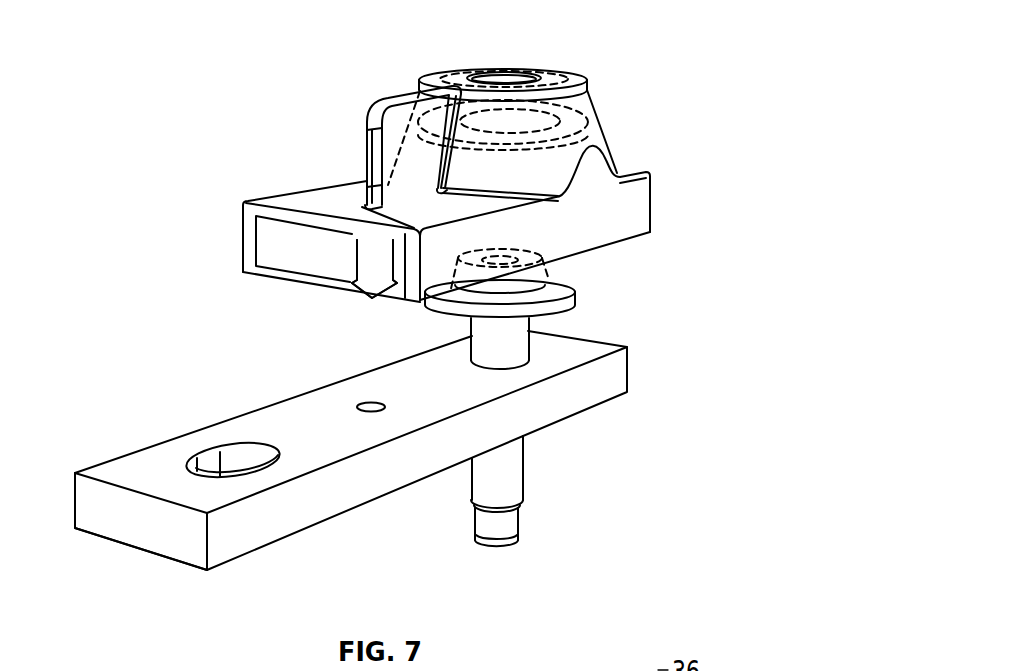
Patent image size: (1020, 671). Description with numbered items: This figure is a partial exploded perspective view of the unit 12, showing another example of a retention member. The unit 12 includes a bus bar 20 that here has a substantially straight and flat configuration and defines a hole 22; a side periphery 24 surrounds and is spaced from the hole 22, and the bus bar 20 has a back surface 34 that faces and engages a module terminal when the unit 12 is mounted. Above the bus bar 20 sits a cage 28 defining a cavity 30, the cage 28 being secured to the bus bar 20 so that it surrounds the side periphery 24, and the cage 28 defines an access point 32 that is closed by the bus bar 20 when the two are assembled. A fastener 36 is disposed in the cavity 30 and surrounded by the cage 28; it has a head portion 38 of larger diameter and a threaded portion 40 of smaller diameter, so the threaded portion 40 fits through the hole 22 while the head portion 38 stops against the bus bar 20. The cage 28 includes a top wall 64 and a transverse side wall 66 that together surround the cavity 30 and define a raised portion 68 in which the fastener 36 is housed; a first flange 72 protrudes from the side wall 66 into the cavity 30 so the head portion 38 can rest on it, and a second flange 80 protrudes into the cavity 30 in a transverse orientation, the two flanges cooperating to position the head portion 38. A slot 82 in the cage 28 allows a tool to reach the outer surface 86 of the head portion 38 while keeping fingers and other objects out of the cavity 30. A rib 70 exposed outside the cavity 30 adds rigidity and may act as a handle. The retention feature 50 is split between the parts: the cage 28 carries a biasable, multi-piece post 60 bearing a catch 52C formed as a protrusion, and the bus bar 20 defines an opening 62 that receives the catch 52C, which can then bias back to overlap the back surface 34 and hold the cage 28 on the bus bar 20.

The unit 12 is at (152, 95).
The bus bar 20 is at (607, 347).
The hole 22 is at (207, 467).
The side periphery 24 is at (360, 498).
The cage 28 is at (642, 192).
The cavity 30 is at (283, 284).
The access point 32 is at (647, 250).
The back surface 34 is at (237, 561).
The fastener 36 is at (513, 510).
The head portion 38 is at (577, 300).
The threaded portion 40 is at (475, 533).
The retention feature 50 is at (389, 326).
The opening 62 is at (378, 402).
The catch 52C is at (352, 284).
The post 60 is at (352, 268).
The top wall 64 is at (576, 76).
The side wall 66 is at (612, 150).
The raised portion 68 is at (694, 102).
The rib 70 is at (367, 123).
The first flange 72 is at (600, 108).
The second flange 80 is at (434, 68).
The slot 82 is at (503, 70).
The outer surface 86 is at (552, 263).